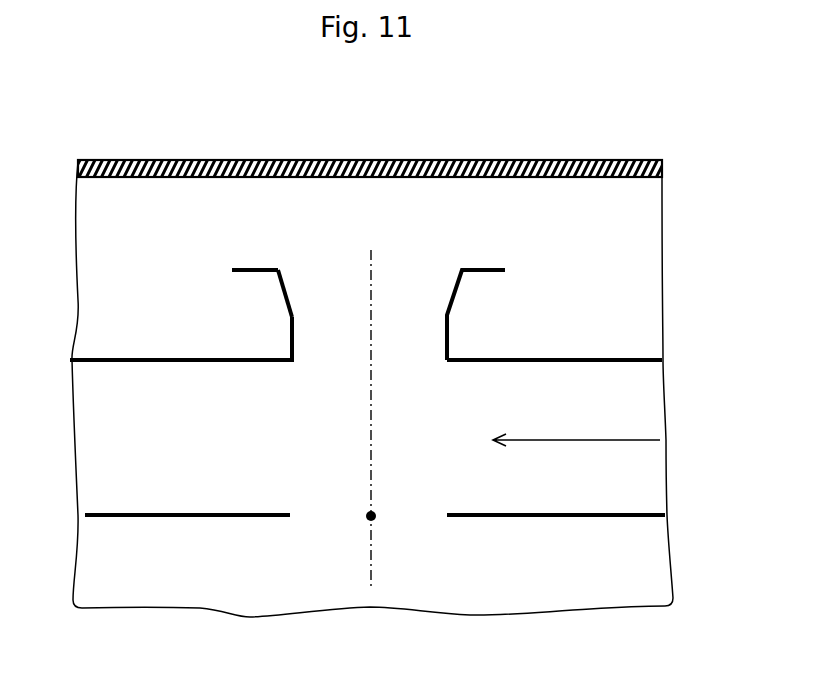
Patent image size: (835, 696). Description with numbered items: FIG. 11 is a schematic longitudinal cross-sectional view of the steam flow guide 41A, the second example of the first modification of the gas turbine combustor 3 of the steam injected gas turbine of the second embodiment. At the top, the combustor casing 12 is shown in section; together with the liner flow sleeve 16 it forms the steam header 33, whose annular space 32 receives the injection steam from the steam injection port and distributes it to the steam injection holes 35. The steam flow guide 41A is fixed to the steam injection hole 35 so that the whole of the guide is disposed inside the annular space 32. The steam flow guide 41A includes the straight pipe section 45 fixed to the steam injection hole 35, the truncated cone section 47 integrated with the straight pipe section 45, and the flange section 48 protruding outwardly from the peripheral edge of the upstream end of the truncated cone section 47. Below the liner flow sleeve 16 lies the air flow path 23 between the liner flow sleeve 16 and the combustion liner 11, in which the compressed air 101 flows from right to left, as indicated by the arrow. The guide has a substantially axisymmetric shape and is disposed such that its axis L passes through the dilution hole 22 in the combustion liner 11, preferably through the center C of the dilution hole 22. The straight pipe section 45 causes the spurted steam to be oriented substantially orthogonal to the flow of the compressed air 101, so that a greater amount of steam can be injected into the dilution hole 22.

The liquid ejecting head 3 is at (710, 139).
The combustion liner 11 is at (643, 515).
The combustor casing 12 is at (590, 158).
The liner flow sleeve 16 is at (638, 358).
The dilution hole 22 is at (292, 516).
The air flow path 23 is at (196, 450).
The annular space 32 is at (553, 277).
The steam header 33 is at (380, 155).
The steam injection hole 35 is at (293, 358).
The steam flow guide 41A is at (488, 260).
The straight pipe section 45 is at (290, 337).
The truncated cone section 47 is at (283, 298).
The flange section 48 is at (234, 267).
The compressed air 101 is at (587, 435).
The axis L is at (370, 563).
The center C is at (371, 516).